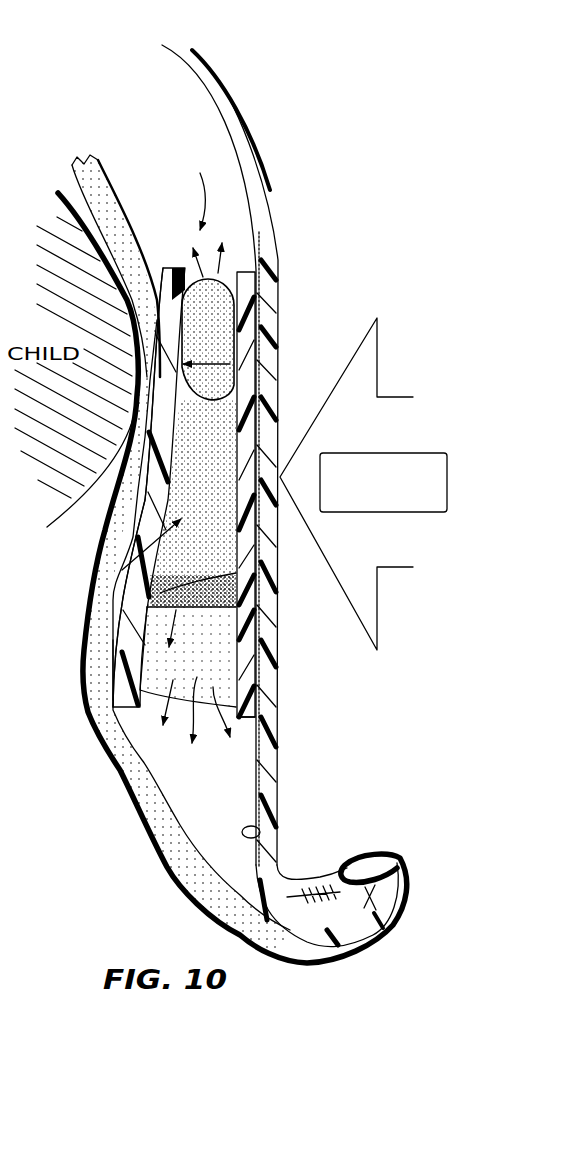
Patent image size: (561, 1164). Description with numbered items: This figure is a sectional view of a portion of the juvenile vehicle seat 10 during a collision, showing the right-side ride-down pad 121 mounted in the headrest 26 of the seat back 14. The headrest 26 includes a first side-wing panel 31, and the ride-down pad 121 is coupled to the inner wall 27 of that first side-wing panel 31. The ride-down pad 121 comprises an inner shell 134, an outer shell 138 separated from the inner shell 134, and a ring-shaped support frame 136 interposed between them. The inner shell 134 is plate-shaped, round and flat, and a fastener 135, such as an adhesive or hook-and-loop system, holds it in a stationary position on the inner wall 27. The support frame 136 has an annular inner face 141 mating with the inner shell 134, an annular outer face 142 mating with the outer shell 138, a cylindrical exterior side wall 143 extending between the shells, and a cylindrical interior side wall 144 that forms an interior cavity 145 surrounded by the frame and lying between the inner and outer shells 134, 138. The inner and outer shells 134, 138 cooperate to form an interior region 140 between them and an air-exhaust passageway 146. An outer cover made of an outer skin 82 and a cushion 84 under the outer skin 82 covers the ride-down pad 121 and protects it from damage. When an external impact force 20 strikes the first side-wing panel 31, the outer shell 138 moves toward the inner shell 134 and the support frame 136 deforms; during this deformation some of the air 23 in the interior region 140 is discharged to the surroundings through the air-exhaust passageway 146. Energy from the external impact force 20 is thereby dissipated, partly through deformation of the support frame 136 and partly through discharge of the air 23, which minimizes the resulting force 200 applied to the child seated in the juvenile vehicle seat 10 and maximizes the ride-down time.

The juvenile vehicle seat 10 is at (218, 73).
The headrest 26 is at (252, 118).
The seat back 14 is at (273, 157).
The outer skin 82 is at (58, 194).
The cushion 84 is at (99, 161).
The ride-down pad 121 is at (189, 192).
The outer shell 138 is at (179, 266).
The air 23 is at (213, 292).
The inner shell 134 is at (248, 266).
The resulting force 200 is at (232, 360).
The support frame 136 is at (242, 378).
The fastener 135 is at (259, 392).
The external impact force 20 is at (382, 453).
The interior cavity 145 is at (192, 482).
The interior region 140 is at (122, 582).
The annular outer face 142 is at (118, 648).
The cylindrical interior side wall 144 is at (233, 586).
The annular inner face 141 is at (237, 654).
The air-exhaust passageway 146 is at (153, 706).
The cylindrical exterior side wall 143 is at (256, 718).
The first side-wing panel 31 is at (276, 810).
The inner wall 27 is at (260, 832).